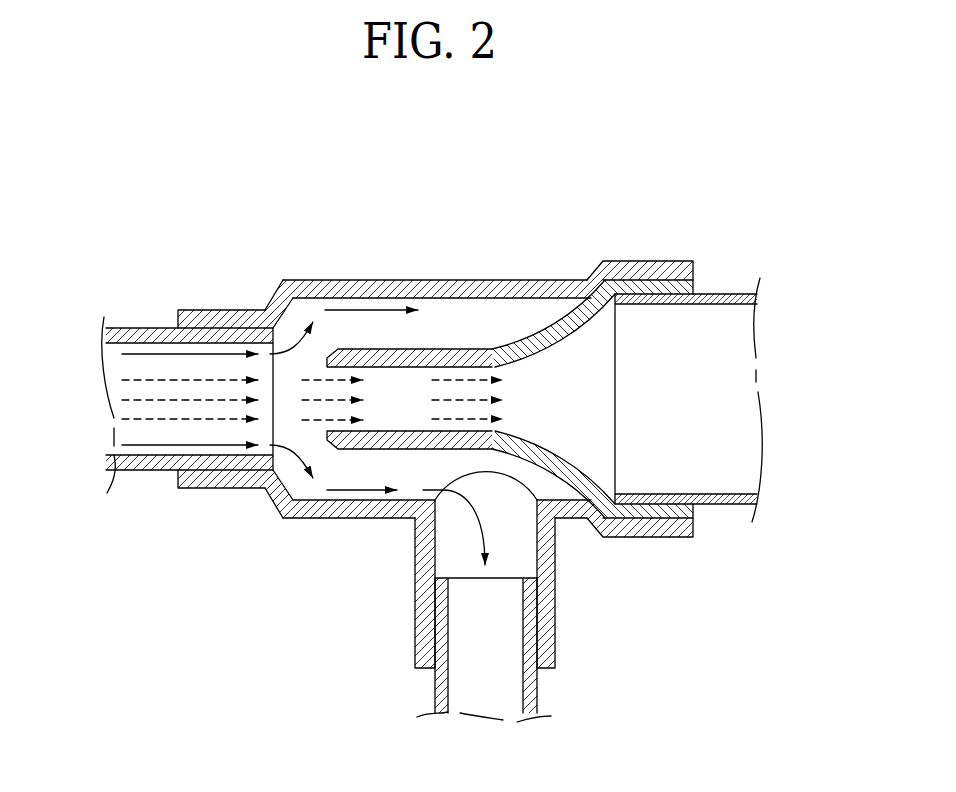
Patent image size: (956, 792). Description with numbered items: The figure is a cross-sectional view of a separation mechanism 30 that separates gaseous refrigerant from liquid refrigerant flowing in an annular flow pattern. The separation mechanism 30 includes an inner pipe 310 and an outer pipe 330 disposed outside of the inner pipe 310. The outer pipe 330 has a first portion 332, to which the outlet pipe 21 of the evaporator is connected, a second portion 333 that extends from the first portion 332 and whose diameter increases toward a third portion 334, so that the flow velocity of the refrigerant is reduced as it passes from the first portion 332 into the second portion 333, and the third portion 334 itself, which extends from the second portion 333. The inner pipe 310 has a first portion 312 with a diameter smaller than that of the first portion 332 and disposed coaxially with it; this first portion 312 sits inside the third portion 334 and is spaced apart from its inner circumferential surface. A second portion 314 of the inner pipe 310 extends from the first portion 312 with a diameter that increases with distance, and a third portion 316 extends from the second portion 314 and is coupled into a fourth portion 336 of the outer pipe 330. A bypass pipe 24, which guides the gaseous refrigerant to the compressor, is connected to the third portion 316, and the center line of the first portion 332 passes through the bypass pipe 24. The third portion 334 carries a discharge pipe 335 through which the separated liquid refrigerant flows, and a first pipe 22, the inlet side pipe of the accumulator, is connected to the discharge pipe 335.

The separation mechanism 30 is at (401, 197).
The outer pipe 330 is at (258, 260).
The first portion 332 is at (204, 482).
The second portion 333 is at (278, 503).
The third portion 334 is at (323, 513).
The discharge pipe 335 is at (552, 617).
The fourth portion 336 is at (634, 527).
The third portion 316 is at (665, 289).
The inner pipe 310 is at (458, 336).
The first portion 312 is at (370, 441).
The second portion 314 is at (553, 337).
The outlet pipe 21 is at (131, 464).
The first pipe 22 is at (533, 690).
The bypass pipe 24 is at (737, 299).